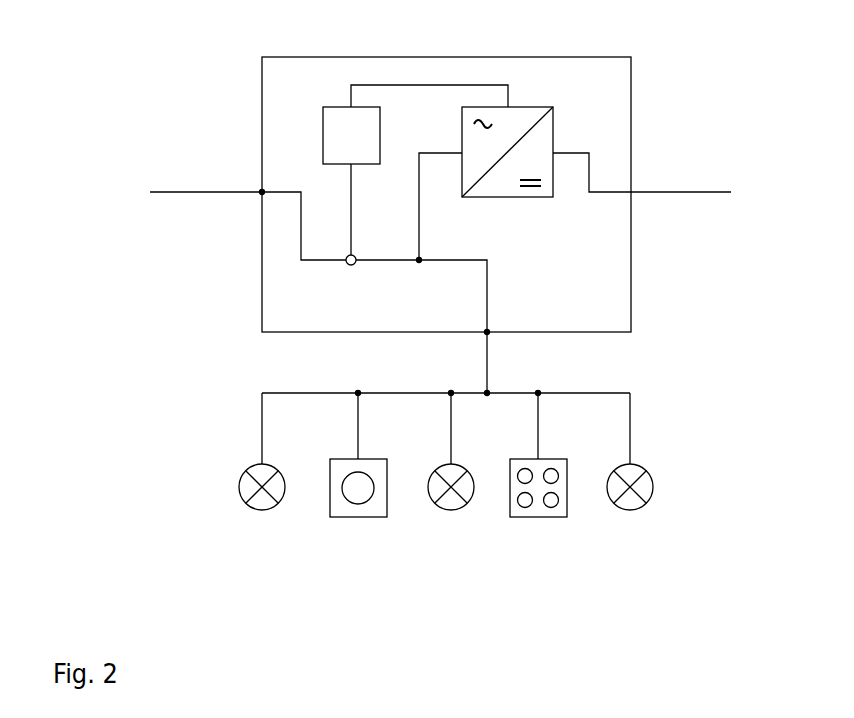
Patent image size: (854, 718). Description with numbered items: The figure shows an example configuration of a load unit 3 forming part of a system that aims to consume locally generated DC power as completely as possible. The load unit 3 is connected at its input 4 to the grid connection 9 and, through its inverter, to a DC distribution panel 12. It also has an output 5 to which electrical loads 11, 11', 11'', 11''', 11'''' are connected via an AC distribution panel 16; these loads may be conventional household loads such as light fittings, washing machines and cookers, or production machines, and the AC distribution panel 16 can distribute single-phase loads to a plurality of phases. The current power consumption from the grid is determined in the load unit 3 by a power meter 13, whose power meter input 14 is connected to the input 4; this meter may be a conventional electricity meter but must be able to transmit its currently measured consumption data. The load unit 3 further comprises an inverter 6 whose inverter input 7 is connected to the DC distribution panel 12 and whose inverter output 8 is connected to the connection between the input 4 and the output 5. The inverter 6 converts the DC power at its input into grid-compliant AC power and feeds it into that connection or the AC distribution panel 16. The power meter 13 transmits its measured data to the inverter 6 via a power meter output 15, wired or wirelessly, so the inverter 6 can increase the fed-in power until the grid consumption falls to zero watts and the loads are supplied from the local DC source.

The load unit 3 is at (631, 124).
The input 4 is at (262, 192).
The output 5 is at (490, 336).
The inverter 6 is at (553, 107).
The inverter input 7 is at (553, 153).
The inverter output 8 is at (460, 156).
The grid connection 9 is at (218, 196).
The electrical load 11 is at (271, 486).
The electrical load 11' is at (371, 486).
The electrical load 11'' is at (471, 486).
The electrical load 11''' is at (553, 486).
The electrical load 11'''' is at (650, 486).
The DC distribution panel 12 is at (678, 192).
The power meter 13 is at (322, 128).
The power meter input 14 is at (352, 166).
The power meter output 15 is at (437, 84).
The AC distribution panel 16 is at (614, 388).